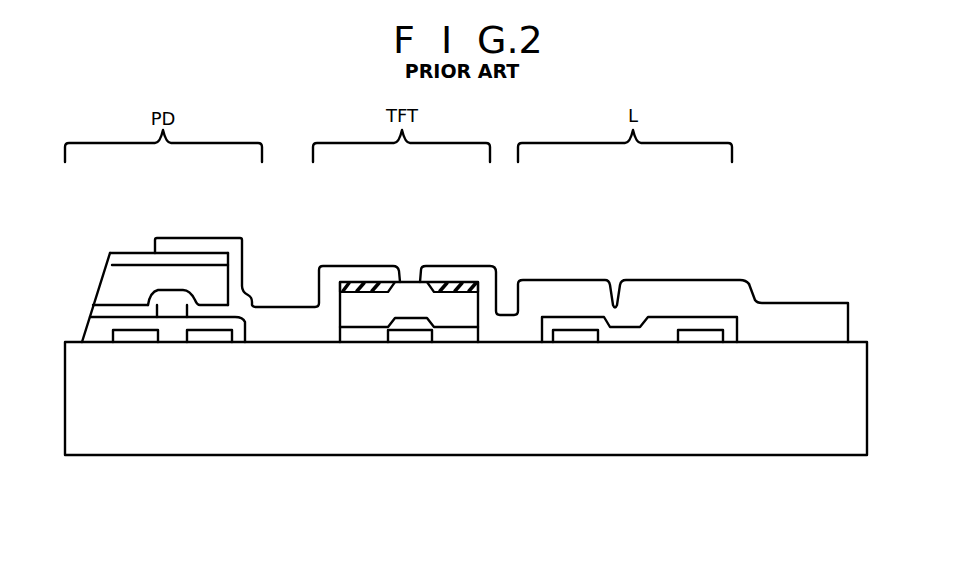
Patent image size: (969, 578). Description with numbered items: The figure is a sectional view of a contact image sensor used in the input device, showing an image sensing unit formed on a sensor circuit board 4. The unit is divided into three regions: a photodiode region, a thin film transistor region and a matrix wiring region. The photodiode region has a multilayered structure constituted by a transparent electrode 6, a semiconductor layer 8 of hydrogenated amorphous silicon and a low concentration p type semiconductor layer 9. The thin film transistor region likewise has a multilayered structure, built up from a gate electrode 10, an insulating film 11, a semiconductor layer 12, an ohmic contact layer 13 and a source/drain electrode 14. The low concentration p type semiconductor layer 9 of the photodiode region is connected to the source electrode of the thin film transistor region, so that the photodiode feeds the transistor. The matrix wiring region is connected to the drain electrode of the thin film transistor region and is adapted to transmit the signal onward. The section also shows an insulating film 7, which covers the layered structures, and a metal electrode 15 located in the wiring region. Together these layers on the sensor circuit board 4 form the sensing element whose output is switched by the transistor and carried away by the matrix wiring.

The sensor circuit board 4 is at (830, 433).
The transparent electrode 6 is at (167, 310).
The insulating film 7 is at (112, 312).
The semiconductor layer 8 is at (222, 282).
The low concentration p type semiconductor layer 9 is at (190, 262).
The gate electrode 10 is at (423, 340).
The insulating film 11 is at (350, 335).
The semiconductor layer 12 is at (375, 315).
The ohmic contact layer 13 is at (440, 287).
The source/drain electrode 14 is at (283, 328).
The metal electrode 15 is at (822, 317).